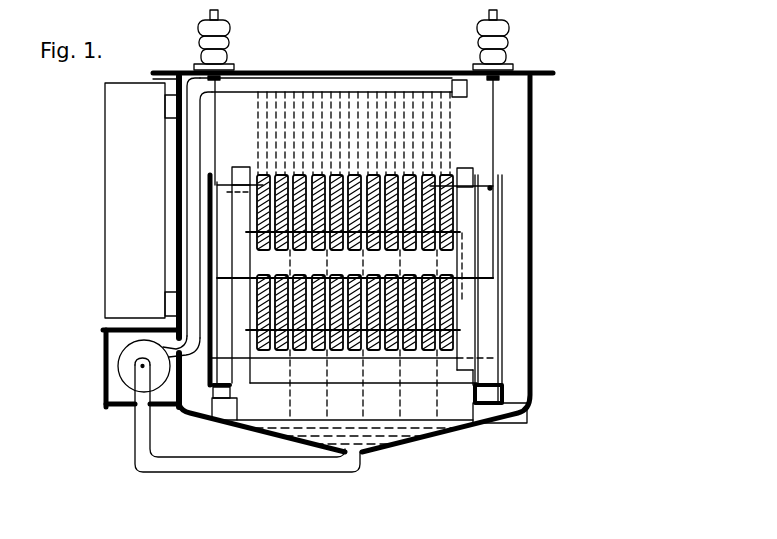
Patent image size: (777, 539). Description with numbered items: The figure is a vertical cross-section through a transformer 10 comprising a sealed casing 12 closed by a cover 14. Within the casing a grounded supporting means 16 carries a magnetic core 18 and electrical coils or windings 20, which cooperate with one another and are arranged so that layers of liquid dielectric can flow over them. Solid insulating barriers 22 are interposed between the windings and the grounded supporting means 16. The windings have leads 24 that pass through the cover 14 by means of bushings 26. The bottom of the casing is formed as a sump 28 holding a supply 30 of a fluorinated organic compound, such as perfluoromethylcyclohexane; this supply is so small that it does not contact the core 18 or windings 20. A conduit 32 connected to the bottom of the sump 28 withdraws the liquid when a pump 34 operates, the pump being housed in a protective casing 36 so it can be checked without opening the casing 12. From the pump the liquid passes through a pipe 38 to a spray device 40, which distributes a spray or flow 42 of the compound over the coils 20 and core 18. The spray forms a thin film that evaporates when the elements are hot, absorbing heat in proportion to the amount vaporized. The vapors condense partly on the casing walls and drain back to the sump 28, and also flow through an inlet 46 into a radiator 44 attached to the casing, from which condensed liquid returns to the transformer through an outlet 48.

The transformer 10 is at (330, 51).
The sealed casing 12 is at (534, 247).
The cover 14 is at (541, 72).
The grounded supporting means 16 is at (488, 347).
The magnetic core 18 is at (430, 220).
The electrical coils or windings 20 is at (437, 224).
The solid insulating barriers 22 is at (238, 260).
The leads 24 is at (215, 104).
The bushings 26 is at (198, 28).
The sump 28 is at (477, 434).
The supply of fluorinated organic compound 30 is at (237, 425).
The conduit 32 is at (285, 470).
The pump 34 is at (122, 369).
The protective casing 36 is at (106, 355).
The pipe 38 is at (194, 143).
The spray device 40 is at (357, 84).
The spray or flow of liquid fluorinated compound 42 is at (425, 128).
The radiator 44 is at (105, 163).
The inlet 46 is at (168, 103).
The outlet 48 is at (168, 302).